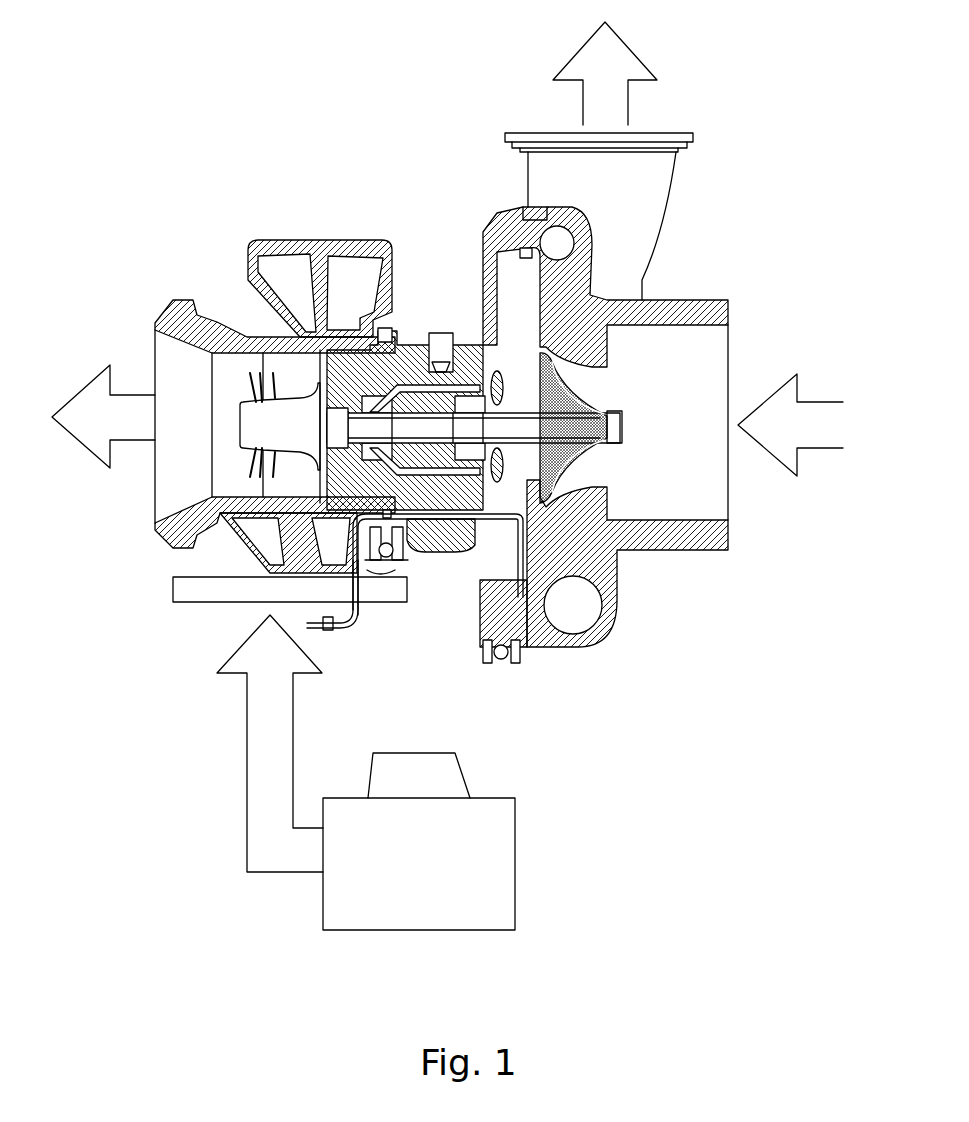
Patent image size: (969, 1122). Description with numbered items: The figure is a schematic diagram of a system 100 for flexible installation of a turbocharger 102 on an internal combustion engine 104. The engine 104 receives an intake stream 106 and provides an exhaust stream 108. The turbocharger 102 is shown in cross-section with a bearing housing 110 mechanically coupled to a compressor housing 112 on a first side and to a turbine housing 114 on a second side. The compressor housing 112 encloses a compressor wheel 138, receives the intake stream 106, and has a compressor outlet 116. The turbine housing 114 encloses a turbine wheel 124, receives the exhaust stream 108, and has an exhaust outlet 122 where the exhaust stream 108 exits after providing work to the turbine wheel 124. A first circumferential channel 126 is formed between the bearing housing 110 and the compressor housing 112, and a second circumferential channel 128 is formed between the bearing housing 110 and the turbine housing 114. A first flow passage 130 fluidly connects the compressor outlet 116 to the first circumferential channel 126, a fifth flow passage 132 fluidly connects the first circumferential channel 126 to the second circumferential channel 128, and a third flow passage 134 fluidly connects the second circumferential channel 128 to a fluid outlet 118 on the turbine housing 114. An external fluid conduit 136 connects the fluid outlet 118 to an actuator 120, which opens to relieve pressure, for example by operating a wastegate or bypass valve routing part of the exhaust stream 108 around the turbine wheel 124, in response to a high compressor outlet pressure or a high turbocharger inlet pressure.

The system 100 is at (150, 53).
The turbocharger 102 is at (422, 182).
The internal combustion engine 104 is at (435, 851).
The intake stream 106 is at (829, 433).
The exhaust stream 108 is at (285, 753).
The bearing housing 110 is at (443, 489).
The compressor housing 112 is at (680, 313).
The turbine housing 114 is at (320, 242).
The compressor outlet 116 is at (619, 106).
The fluid outlet 118 is at (357, 580).
The actuator 120 is at (328, 632).
The exhaust outlet 122 is at (132, 423).
The turbine wheel 124 is at (253, 393).
The first circumferential channel 126 is at (487, 249).
The second circumferential channel 128 is at (397, 333).
The first flow passage 130 is at (523, 220).
The fifth flow passage 132 is at (520, 557).
The third flow passage 134 is at (365, 576).
The fluid conduit 136 is at (358, 613).
The compressor wheel 138 is at (567, 407).